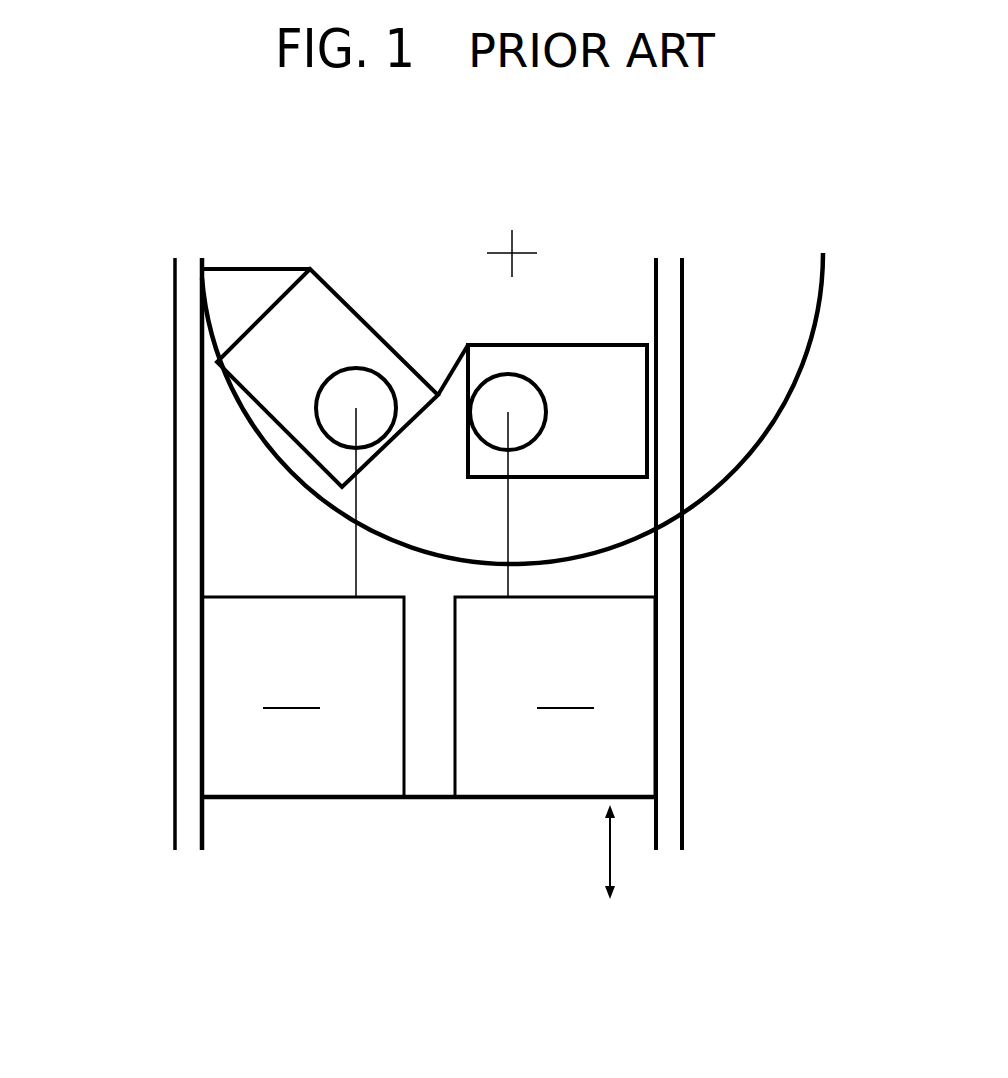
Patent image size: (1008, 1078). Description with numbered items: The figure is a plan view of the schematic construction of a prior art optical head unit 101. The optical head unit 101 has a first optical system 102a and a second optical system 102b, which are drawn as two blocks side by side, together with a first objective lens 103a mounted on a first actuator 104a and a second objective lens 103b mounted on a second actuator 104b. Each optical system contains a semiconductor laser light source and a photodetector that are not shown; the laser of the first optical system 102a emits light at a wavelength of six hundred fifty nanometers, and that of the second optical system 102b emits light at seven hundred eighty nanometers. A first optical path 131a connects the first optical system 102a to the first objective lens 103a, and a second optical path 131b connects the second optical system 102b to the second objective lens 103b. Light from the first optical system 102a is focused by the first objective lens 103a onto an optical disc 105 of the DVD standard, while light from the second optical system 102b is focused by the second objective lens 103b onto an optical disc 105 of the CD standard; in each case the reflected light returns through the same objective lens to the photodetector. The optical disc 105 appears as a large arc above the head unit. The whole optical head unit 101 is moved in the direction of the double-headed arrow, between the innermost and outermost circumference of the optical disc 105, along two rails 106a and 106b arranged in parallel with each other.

The optical head unit 101 is at (429, 777).
The first optical system 102a is at (303, 697).
The second optical system 102b is at (555, 697).
The first objective lens 103a is at (322, 407).
The second objective lens 103b is at (537, 418).
The first actuator 104a is at (310, 295).
The second actuator 104b is at (587, 360).
The optical disc 105 is at (792, 299).
The rail 106a is at (182, 686).
The rail 106b is at (667, 698).
The first optical path 131a is at (356, 550).
The second optical path 131b is at (508, 525).